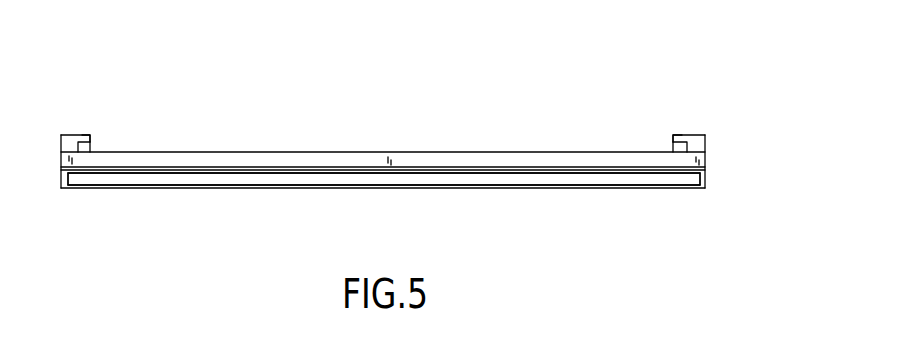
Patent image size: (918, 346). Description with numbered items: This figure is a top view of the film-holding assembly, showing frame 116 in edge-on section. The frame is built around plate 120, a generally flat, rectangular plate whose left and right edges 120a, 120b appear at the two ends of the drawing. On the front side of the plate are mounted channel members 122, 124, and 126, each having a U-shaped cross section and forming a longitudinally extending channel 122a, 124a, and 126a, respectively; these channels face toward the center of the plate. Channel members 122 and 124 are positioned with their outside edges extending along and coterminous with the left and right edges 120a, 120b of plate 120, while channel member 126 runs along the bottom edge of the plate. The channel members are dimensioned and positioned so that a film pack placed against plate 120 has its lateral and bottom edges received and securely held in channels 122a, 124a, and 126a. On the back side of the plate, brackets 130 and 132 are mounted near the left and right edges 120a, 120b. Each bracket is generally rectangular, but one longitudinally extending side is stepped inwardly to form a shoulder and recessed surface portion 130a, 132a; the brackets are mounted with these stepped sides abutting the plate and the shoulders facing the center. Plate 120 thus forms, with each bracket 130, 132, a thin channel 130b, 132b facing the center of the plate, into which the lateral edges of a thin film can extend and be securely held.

The frame 116 is at (316, 138).
The plate 120 is at (364, 160).
The left edge of plate 120a is at (61, 159).
The right edge of plate 120b is at (706, 160).
The channel member 122 is at (61, 182).
The channel 122a is at (72, 181).
The channel member 124 is at (706, 177).
The channel 124a is at (689, 178).
The channel member 126 is at (492, 188).
The channel 126a is at (427, 180).
The bracket 130 is at (65, 135).
The shoulder and recessed surface portion 130a is at (86, 135).
The thin channel 130b is at (87, 147).
The bracket 132 is at (700, 137).
The shoulder and recessed surface portion 132a is at (677, 136).
The thin channel 132b is at (677, 145).